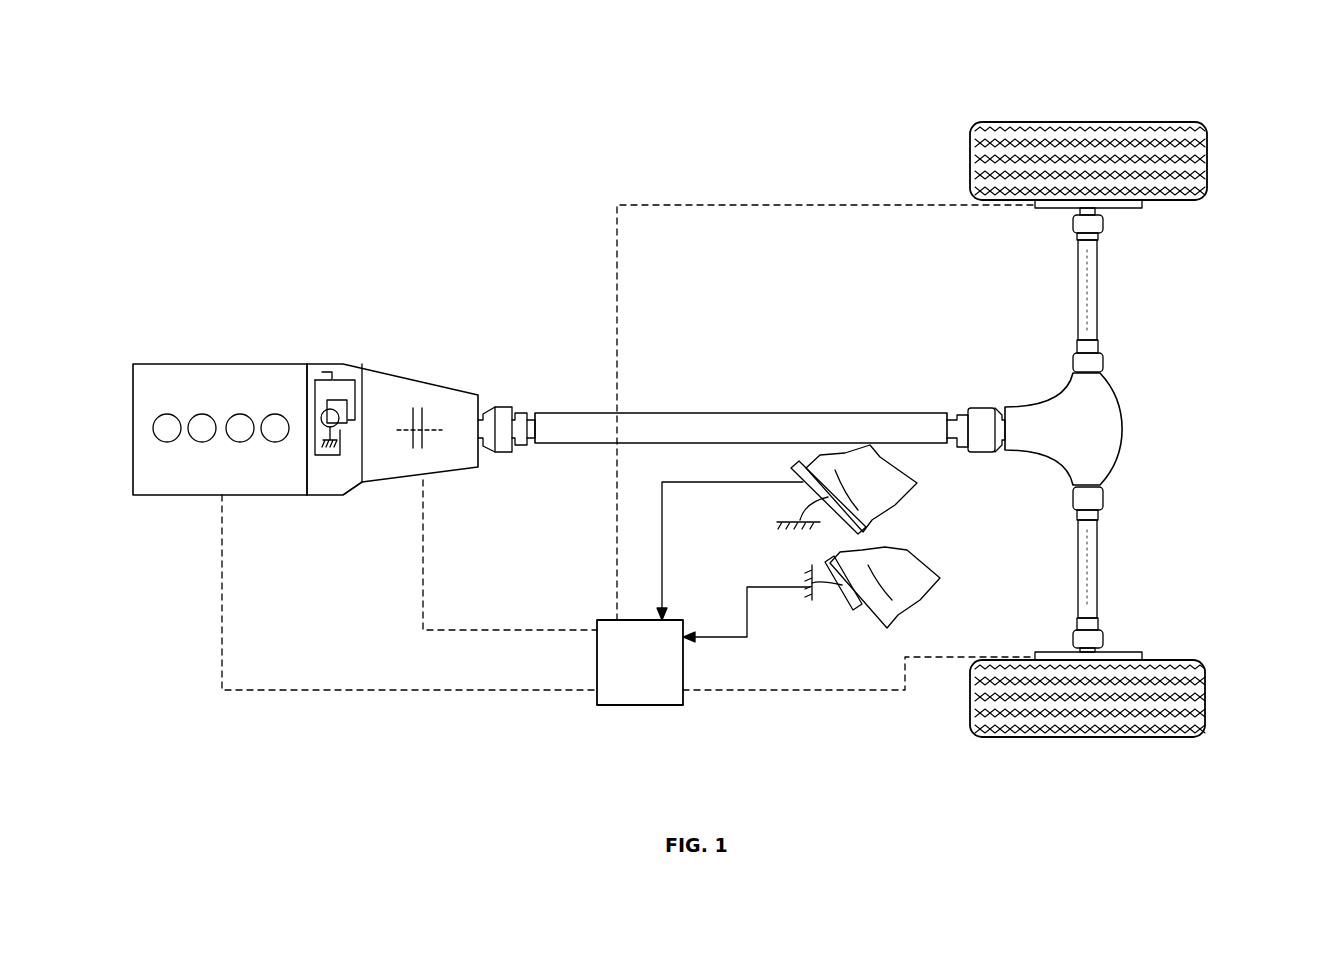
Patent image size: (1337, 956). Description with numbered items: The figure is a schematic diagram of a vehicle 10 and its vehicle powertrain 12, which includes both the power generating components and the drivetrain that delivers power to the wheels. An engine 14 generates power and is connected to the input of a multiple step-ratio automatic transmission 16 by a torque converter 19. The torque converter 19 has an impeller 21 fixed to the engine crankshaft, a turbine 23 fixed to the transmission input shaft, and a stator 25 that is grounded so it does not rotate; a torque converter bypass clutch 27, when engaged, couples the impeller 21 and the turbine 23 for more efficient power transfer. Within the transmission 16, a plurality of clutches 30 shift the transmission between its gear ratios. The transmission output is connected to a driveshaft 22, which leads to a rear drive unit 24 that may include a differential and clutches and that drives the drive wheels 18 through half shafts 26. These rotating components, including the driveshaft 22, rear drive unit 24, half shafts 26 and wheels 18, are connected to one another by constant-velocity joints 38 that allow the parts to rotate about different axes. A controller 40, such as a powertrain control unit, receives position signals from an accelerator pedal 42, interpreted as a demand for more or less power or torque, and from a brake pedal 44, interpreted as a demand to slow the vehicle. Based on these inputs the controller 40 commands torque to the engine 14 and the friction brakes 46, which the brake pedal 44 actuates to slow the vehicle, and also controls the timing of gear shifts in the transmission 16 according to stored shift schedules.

The vehicle 10 is at (370, 85).
The vehicle powertrain 12 is at (425, 192).
The engine 14 is at (173, 495).
The transmission 16 is at (450, 472).
The drive wheels 18 is at (1207, 160).
The torque converter 19 is at (327, 495).
The impeller 21 is at (340, 415).
The driveshaft 22 is at (746, 415).
The turbine 23 is at (320, 412).
The rear drive unit 24 is at (1120, 425).
The stator 25 is at (327, 437).
The half shafts 26 is at (1100, 300).
The torque converter bypass clutch 27 is at (343, 363).
The clutches 30 is at (426, 420).
The constant-velocity joints 38 is at (502, 406).
The controller 40 is at (640, 705).
The accelerator pedal 42 is at (803, 484).
The brake pedal 44 is at (855, 605).
The friction brakes 46 is at (1053, 210).